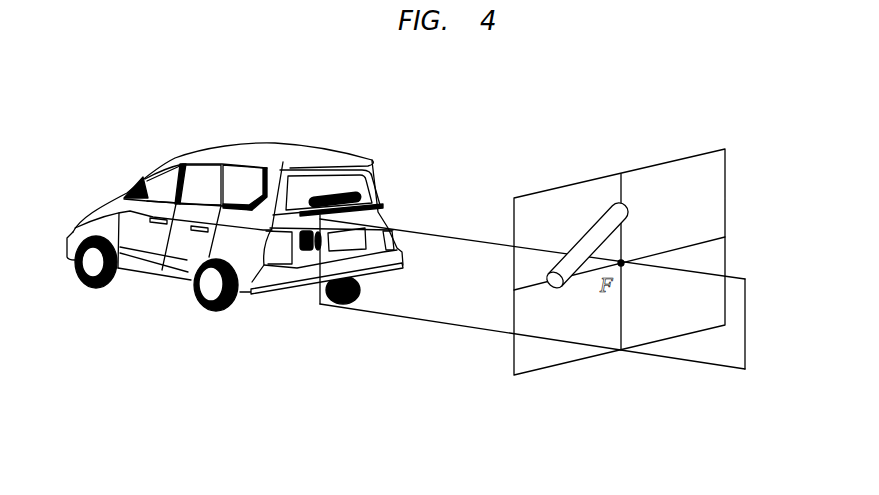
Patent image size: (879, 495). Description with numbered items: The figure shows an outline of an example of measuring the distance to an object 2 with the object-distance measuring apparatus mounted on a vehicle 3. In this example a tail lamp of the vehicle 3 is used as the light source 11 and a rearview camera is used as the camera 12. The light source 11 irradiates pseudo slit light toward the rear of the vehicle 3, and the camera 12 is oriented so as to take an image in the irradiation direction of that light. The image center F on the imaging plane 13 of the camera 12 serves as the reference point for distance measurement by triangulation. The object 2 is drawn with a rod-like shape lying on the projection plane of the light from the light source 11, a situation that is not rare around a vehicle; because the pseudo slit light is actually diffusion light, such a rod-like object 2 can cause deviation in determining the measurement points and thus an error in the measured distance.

The object 2 is at (600, 212).
The vehicle 3 is at (229, 146).
The light source 11 is at (331, 193).
The camera 12 is at (299, 258).
The imaging plane 13 is at (709, 149).